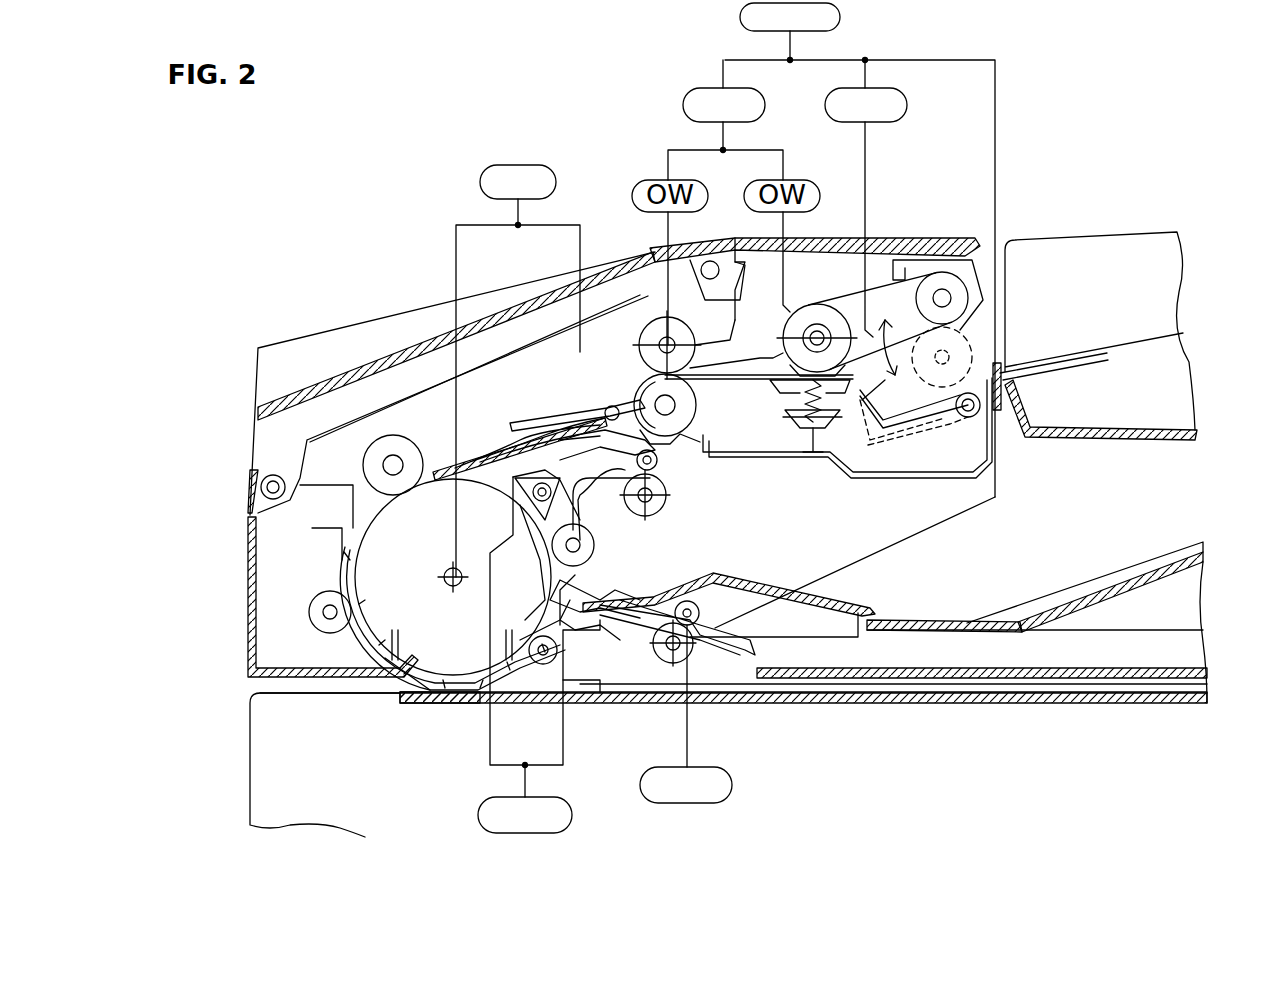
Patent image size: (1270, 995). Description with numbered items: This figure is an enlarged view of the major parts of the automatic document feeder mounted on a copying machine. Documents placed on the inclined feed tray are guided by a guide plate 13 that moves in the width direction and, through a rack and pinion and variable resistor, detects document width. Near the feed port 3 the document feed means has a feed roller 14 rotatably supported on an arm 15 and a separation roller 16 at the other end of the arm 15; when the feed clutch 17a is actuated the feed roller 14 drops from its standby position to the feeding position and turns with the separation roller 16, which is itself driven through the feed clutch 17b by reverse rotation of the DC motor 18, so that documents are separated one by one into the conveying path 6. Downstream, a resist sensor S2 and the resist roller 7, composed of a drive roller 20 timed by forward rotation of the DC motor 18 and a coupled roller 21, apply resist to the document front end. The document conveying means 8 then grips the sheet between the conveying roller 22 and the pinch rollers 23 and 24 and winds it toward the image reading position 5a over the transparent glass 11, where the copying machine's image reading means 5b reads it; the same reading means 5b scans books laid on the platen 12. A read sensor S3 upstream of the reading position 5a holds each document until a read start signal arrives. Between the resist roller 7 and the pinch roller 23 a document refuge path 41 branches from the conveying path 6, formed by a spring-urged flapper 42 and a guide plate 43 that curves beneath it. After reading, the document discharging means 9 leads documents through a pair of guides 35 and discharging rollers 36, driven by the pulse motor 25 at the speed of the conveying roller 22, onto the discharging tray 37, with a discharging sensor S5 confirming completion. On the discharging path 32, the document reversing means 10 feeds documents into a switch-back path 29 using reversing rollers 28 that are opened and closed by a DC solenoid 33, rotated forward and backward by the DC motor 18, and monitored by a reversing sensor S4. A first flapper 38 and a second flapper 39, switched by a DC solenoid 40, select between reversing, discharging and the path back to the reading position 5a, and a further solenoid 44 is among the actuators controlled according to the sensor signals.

The feed port 3 is at (976, 355).
The image reading position 5a is at (405, 680).
The image reading means 5b is at (452, 718).
The conveying path 6 is at (473, 445).
The resist roller 7 is at (693, 444).
The document conveying means 8 is at (342, 542).
The document discharging means 9 is at (902, 520).
The document reversing means 10 is at (745, 595).
The transparent glass 11 is at (397, 705).
The platen 12 is at (949, 703).
The guide plate 13 is at (1170, 275).
The feed roller 14 is at (946, 266).
The arm 15 is at (874, 234).
The separation roller 16 is at (812, 316).
The feed clutch 17a is at (907, 105).
The feed clutch 17b is at (683, 103).
The DC motor 18 is at (840, 17).
The drive roller 20 is at (700, 337).
The coupled roller 21 is at (639, 345).
The conveying roller 22 is at (370, 574).
The pinch roller 23 is at (393, 464).
The pinch roller 24 is at (308, 615).
The pulse motor 25 is at (517, 165).
The reversing rollers 28 is at (665, 670).
The switch-back path 29 is at (1116, 650).
The discharging path 32 is at (490, 690).
The DC solenoid 33 is at (728, 790).
The guides 35 is at (595, 571).
The discharging rollers 36 is at (655, 502).
The discharging tray 37 is at (1143, 570).
The first flapper 38 is at (540, 600).
The second flapper 39 is at (520, 501).
The DC solenoid 40 is at (570, 822).
The document refuge path 41 is at (557, 412).
The flapper 42 is at (520, 430).
The guide plate 43 is at (490, 455).
The solenoid 44 is at (575, 547).
The resist sensor S2 is at (722, 406).
The read sensor S3 is at (348, 650).
The reversing sensor S4 is at (623, 640).
The discharging sensor S5 is at (605, 506).